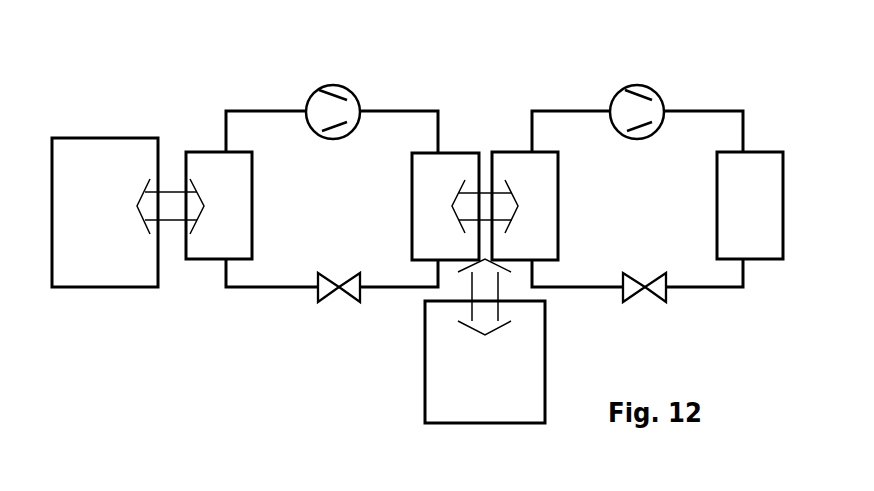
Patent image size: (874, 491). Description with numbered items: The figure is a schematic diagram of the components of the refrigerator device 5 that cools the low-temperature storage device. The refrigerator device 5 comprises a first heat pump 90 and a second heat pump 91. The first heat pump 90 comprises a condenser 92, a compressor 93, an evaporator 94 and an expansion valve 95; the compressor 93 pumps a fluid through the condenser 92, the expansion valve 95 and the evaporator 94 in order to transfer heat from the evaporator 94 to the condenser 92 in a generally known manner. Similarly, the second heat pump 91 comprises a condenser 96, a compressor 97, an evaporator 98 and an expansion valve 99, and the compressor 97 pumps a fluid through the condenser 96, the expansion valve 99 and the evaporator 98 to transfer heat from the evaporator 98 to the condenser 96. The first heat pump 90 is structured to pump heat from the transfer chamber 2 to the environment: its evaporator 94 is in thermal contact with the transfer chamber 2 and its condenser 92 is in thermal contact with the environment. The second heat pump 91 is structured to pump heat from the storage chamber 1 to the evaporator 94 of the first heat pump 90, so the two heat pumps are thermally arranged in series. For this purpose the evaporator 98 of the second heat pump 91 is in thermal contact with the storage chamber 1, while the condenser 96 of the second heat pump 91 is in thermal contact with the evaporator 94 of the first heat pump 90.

The storage chamber 1 is at (105, 192).
The transfer chamber 2 is at (485, 389).
The refrigerator device 5 is at (404, 363).
The first heat pump 90 is at (659, 153).
The second heat pump 91 is at (335, 153).
The condenser 92 is at (766, 182).
The compressor 93 is at (654, 93).
The evaporator 94 is at (508, 164).
The expansion valve 95 is at (655, 312).
The condenser 96 is at (442, 165).
The compressor 97 is at (323, 91).
The evaporator 98 is at (194, 181).
The expansion valve 99 is at (326, 314).